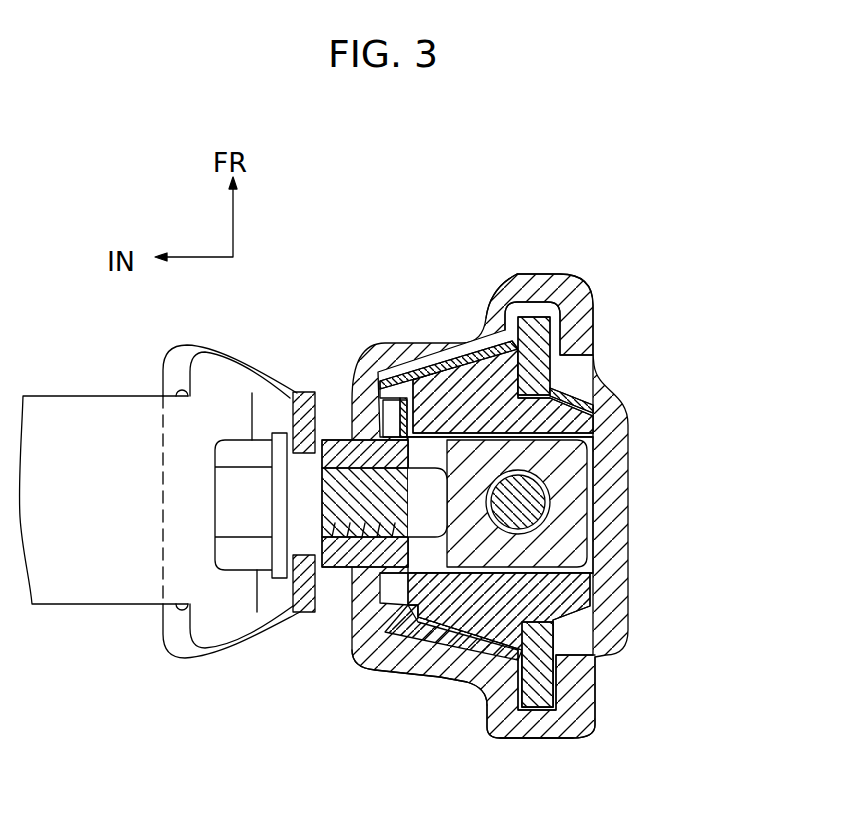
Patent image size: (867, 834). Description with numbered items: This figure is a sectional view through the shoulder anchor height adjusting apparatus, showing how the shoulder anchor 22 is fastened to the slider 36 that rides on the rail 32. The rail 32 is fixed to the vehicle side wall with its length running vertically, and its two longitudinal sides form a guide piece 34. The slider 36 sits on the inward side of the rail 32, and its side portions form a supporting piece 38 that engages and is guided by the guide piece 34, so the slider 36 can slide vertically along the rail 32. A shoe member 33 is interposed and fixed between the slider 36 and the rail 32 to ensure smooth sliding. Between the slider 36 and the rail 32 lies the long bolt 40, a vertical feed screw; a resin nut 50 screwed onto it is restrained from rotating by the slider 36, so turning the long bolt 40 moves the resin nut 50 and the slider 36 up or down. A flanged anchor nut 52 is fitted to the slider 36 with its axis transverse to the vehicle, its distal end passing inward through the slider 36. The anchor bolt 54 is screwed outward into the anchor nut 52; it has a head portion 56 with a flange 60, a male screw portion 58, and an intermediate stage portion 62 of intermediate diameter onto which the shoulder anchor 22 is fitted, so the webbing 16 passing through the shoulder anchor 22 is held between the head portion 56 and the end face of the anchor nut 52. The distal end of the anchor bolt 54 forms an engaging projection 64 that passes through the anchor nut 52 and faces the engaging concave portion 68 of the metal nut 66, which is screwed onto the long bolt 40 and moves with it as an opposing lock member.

The webbing 16 is at (92, 528).
The shoulder anchor 22 is at (218, 390).
The rail 32 is at (632, 544).
The shoe member 33 is at (530, 394).
The guide piece 34 is at (575, 302).
The slider 36 is at (450, 687).
The supporting piece 38 is at (545, 730).
The long bolt 40 is at (547, 470).
The resin nut 50 is at (437, 395).
The anchor nut 52 is at (408, 410).
The anchor bolt 54 is at (227, 577).
The head portion 56 is at (258, 548).
The male screw portion 58 is at (360, 510).
The flange 60 is at (282, 440).
The intermediate stage portion 62 is at (322, 447).
The engaging projection 64 is at (428, 487).
The metal nut 66 is at (567, 507).
The engaging concave portion 68 is at (492, 340).